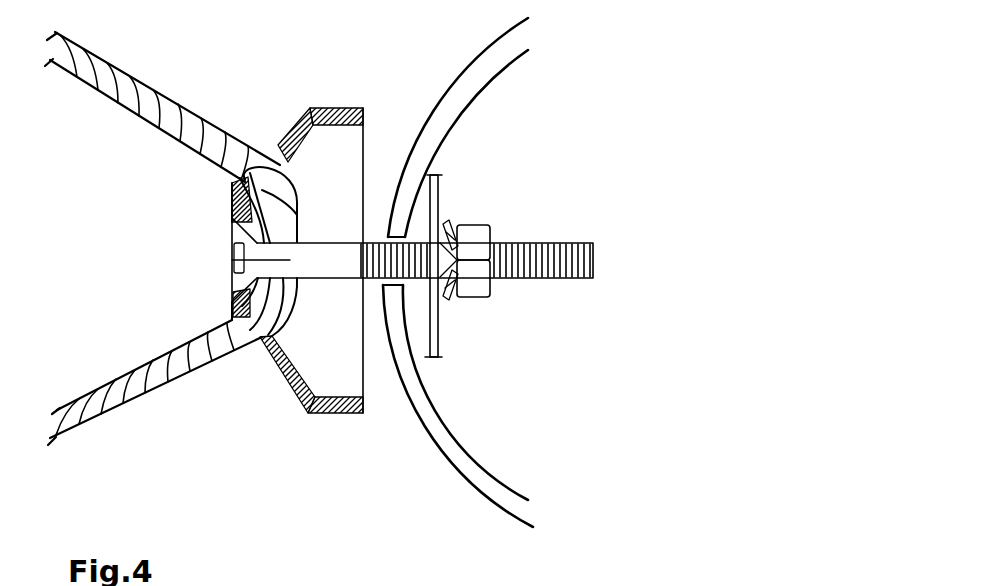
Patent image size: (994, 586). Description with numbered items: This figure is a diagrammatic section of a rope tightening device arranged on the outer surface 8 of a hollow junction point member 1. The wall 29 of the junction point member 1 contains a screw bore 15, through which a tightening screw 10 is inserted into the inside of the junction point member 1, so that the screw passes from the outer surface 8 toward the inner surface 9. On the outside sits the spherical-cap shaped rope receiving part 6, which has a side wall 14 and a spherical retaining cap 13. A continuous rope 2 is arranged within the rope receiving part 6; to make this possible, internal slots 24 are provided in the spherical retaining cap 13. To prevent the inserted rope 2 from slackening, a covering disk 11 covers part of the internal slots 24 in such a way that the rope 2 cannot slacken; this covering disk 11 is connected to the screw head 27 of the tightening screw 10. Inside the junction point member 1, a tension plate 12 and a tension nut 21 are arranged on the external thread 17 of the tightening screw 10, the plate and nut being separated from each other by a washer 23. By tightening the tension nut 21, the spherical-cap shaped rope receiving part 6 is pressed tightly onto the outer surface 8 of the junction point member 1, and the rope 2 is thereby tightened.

The junction point member 1 is at (535, 32).
The rope 2 is at (205, 118).
The spherical-cap shaped rope receiving part 6 is at (310, 373).
The outer surface 8 is at (515, 126).
The inner surface 9 is at (478, 460).
The tightening screw 10 is at (230, 258).
The covering disk 11 is at (235, 202).
The tension plate 12 is at (442, 173).
The spherical retaining cap 13 is at (278, 152).
The side wall 14 is at (305, 108).
The screw bore 15 is at (382, 237).
The external thread 17 is at (490, 228).
The tension nut 21 is at (478, 297).
The washer 23 is at (447, 297).
The internal slots 24 is at (230, 297).
The screw head 27 is at (233, 235).
The wall 29 is at (498, 53).